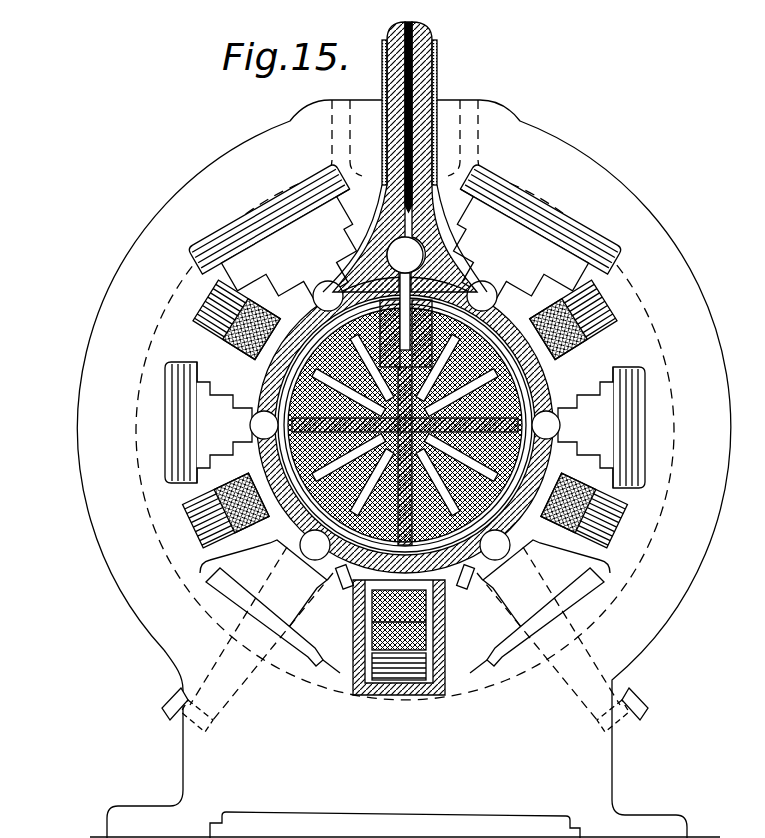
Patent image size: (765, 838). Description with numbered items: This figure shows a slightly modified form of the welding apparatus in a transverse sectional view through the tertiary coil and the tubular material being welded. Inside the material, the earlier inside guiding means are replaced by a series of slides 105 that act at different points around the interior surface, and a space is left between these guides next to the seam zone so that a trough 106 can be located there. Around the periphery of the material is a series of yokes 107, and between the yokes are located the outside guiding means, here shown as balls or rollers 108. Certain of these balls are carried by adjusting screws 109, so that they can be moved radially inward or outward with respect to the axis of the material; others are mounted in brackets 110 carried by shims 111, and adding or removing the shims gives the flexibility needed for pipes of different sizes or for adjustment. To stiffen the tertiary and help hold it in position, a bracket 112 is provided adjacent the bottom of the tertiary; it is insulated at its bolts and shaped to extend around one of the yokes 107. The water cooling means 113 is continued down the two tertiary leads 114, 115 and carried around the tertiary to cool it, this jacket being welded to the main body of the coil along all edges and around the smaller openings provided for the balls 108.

The slides 105 is at (540, 396).
The trough 106 is at (348, 262).
The yokes 107 is at (212, 322).
The balls or rollers 108 is at (517, 272).
The adjusting screws 109 is at (183, 693).
The brackets 110 is at (647, 369).
The shims 111 is at (640, 410).
The bracket 112 is at (356, 688).
The water cooling means 113 is at (437, 95).
The tertiary lead 114 is at (386, 82).
The tertiary lead 115 is at (430, 77).